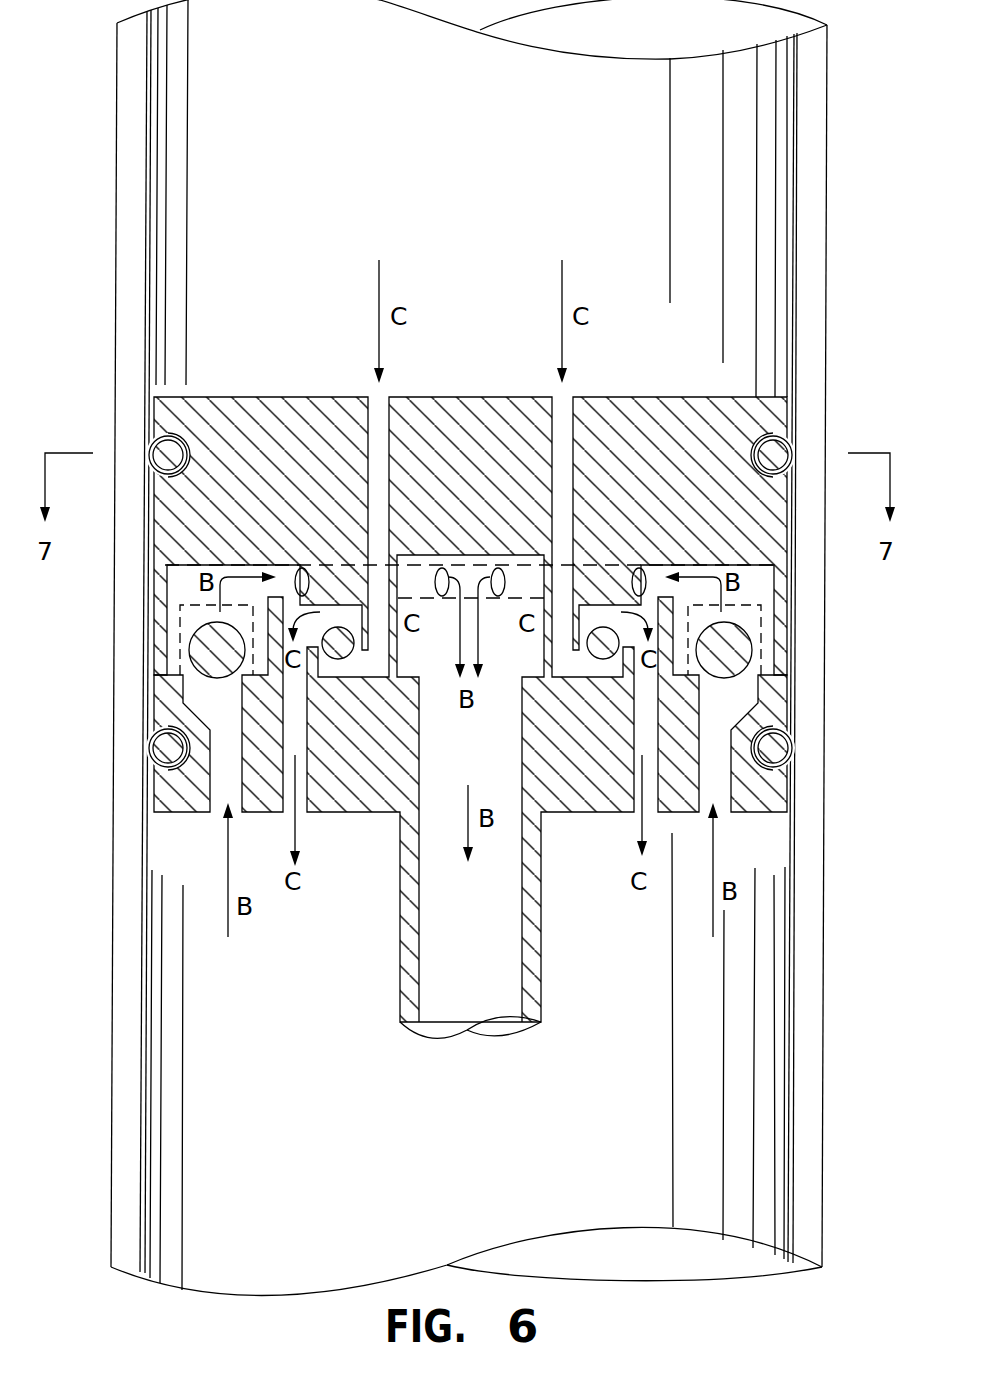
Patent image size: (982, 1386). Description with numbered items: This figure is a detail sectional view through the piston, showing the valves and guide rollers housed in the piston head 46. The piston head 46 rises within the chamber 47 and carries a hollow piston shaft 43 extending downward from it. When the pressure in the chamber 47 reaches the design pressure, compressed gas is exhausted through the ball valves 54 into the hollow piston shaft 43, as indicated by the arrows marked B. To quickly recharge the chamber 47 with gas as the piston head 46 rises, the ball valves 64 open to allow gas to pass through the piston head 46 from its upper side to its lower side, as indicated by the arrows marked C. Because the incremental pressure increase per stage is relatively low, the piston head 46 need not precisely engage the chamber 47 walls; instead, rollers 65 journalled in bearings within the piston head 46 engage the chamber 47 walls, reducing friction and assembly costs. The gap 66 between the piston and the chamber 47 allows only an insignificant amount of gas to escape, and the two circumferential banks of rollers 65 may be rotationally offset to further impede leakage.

The hollow piston shaft 43 is at (541, 897).
The piston head 46 is at (664, 397).
The chamber 47 is at (788, 1197).
The ball valves 54 is at (197, 628).
The ball valves 64 is at (343, 670).
The rollers 65 is at (150, 455).
The gap 66 is at (153, 814).